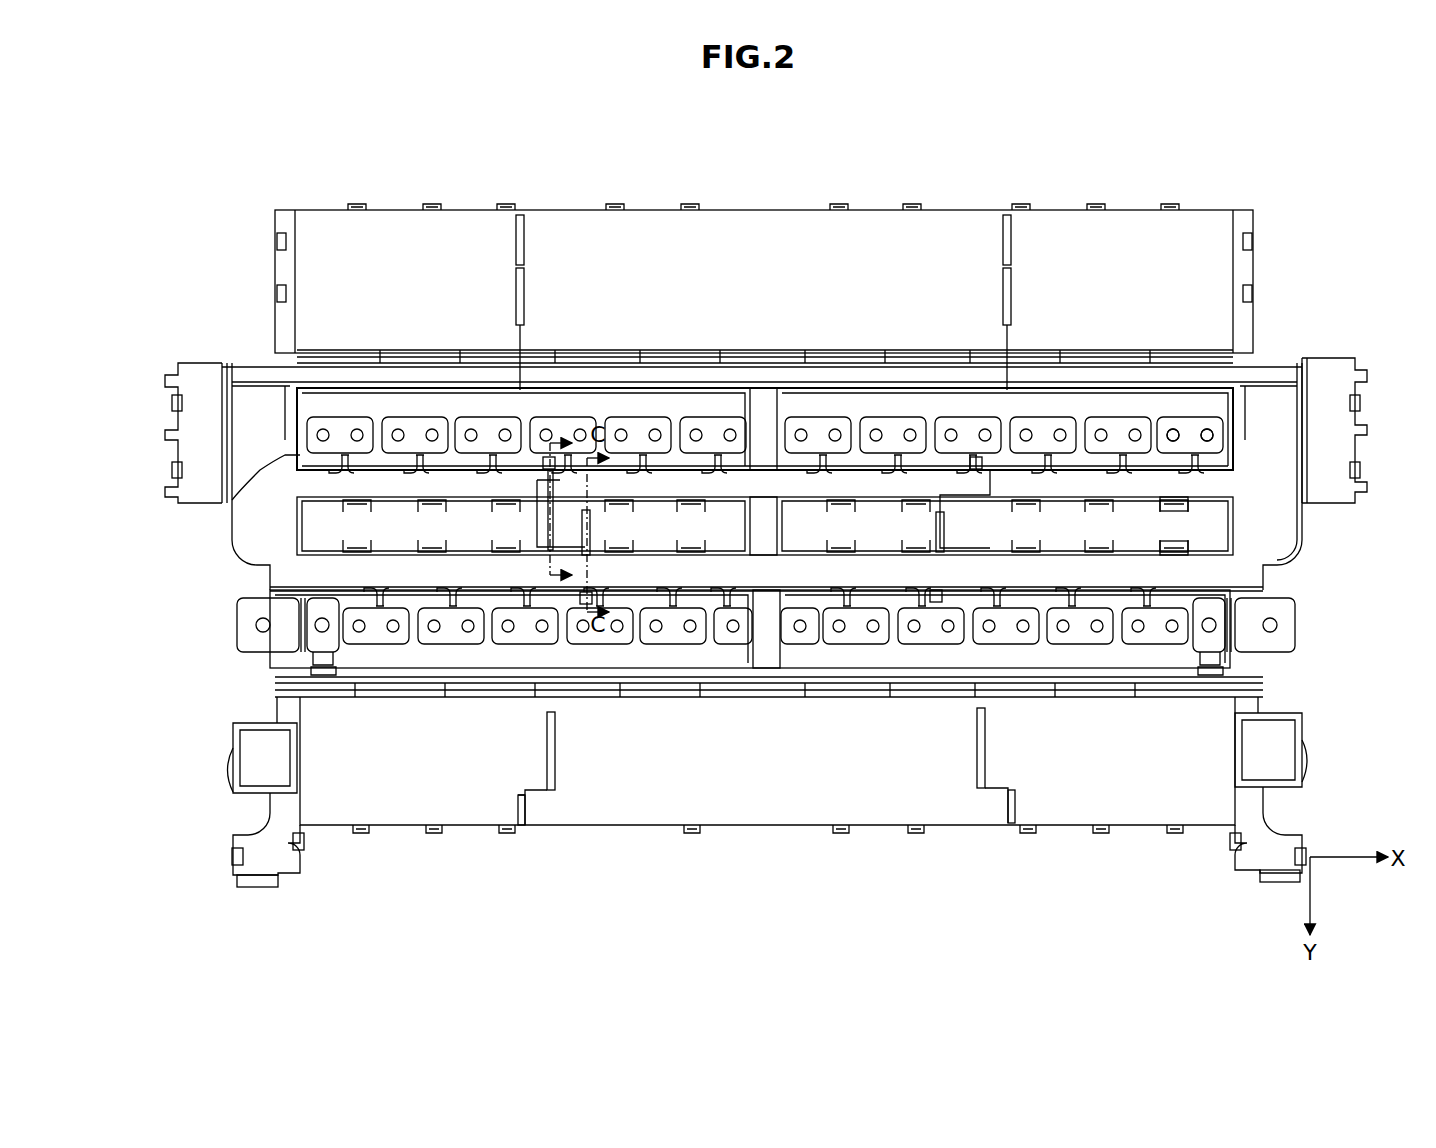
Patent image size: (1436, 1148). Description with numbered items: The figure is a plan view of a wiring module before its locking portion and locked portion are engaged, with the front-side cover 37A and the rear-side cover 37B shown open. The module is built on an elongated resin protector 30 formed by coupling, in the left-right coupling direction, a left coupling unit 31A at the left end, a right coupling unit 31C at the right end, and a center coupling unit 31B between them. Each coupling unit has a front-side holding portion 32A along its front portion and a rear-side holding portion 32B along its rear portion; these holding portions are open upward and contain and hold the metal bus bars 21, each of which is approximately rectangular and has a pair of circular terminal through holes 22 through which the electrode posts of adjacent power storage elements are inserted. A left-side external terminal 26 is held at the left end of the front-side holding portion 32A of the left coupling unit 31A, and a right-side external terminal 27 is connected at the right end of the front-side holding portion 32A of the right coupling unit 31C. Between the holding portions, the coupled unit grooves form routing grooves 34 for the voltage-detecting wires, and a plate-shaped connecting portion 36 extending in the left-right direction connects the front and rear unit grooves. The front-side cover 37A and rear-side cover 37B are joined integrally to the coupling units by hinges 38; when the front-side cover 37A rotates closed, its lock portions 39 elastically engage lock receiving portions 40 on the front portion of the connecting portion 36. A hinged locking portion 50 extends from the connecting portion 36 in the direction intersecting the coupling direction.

The bus bar 21 is at (413, 418).
The terminal through hole 22 is at (1176, 434).
The left-side external terminal 26 is at (250, 634).
The right-side external terminal 27 is at (1285, 633).
The resin protector 30 is at (207, 343).
The left coupling unit 31A is at (470, 232).
The center coupling unit 31B is at (950, 232).
The right coupling unit 31C is at (1210, 232).
The front-side holding portion 32A is at (345, 665).
The rear-side holding portion 32B is at (638, 394).
The routing groove 34 is at (328, 588).
The connecting portion 36 is at (1215, 523).
The front-side cover 37A is at (405, 806).
The rear-side cover 37B is at (310, 232).
The hinge 38 is at (760, 350).
The lock portion 39 is at (357, 205).
The lock receiving portion 40 is at (1173, 503).
The locking portion 50 is at (527, 455).